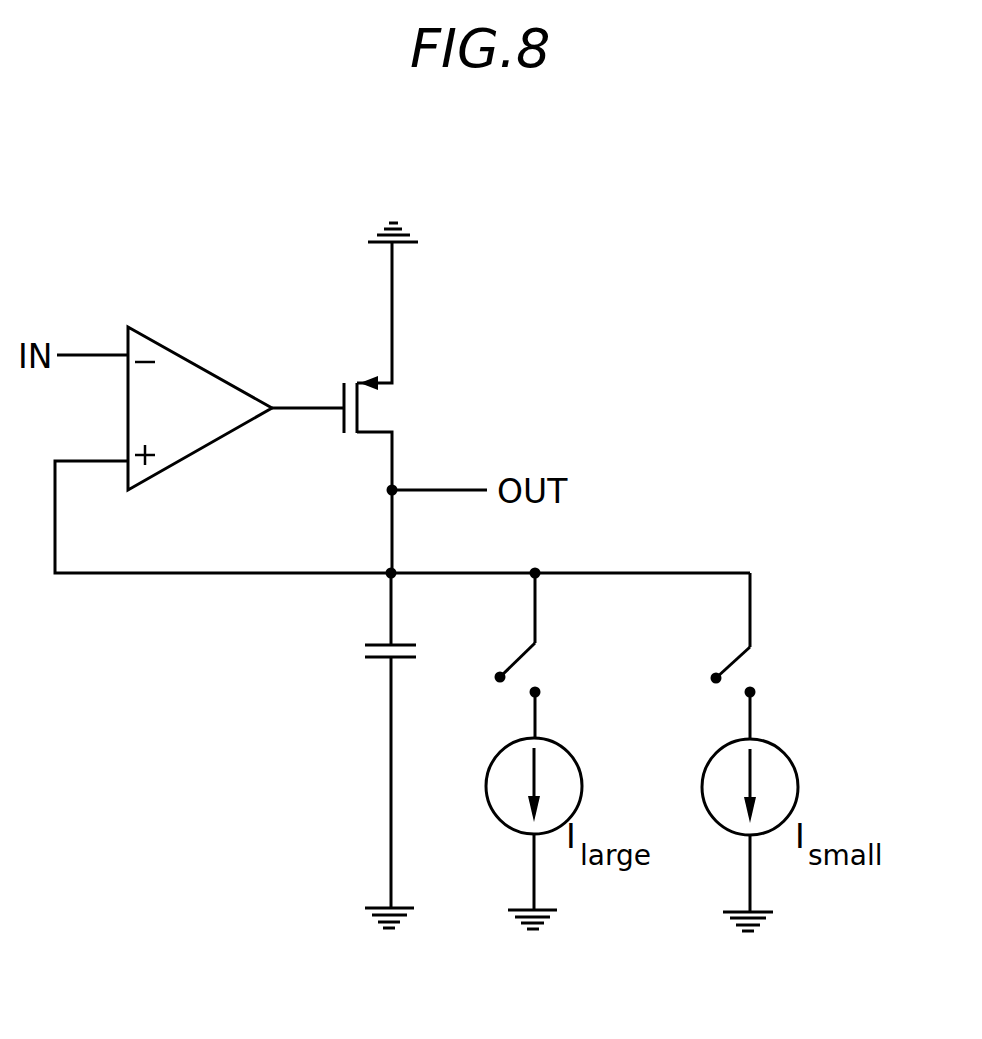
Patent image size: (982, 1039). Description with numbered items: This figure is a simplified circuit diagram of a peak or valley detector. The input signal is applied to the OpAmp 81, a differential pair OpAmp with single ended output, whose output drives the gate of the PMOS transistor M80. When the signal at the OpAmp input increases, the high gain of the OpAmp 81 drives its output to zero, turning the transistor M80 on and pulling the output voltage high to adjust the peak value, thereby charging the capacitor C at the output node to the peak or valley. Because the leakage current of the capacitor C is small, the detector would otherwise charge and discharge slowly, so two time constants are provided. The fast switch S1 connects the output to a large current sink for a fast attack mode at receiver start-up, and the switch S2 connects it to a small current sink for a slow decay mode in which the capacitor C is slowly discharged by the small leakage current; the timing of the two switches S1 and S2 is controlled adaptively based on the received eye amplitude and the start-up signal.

The OpAmp 81 is at (195, 362).
The PMOS transistor M80 is at (372, 408).
The capacitor C is at (367, 750).
The fast switch S1 is at (541, 635).
The switch S2 is at (757, 635).